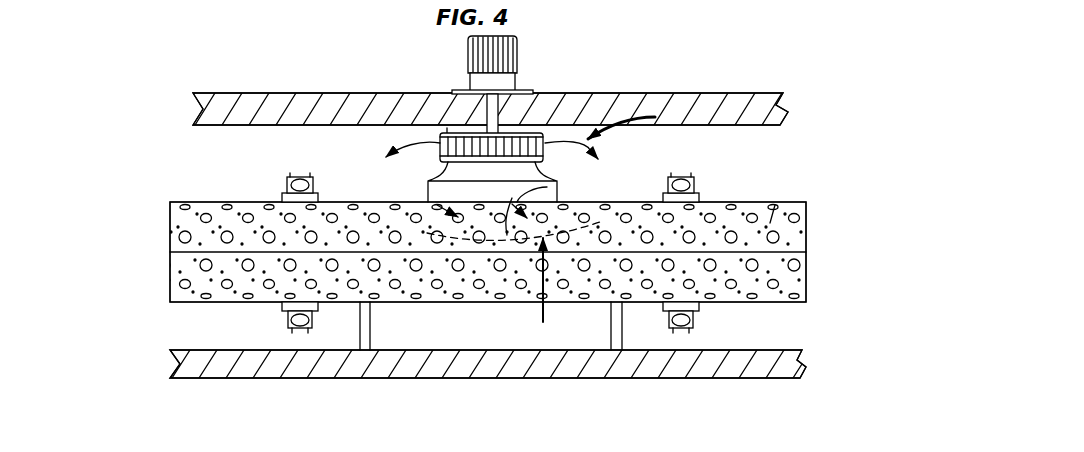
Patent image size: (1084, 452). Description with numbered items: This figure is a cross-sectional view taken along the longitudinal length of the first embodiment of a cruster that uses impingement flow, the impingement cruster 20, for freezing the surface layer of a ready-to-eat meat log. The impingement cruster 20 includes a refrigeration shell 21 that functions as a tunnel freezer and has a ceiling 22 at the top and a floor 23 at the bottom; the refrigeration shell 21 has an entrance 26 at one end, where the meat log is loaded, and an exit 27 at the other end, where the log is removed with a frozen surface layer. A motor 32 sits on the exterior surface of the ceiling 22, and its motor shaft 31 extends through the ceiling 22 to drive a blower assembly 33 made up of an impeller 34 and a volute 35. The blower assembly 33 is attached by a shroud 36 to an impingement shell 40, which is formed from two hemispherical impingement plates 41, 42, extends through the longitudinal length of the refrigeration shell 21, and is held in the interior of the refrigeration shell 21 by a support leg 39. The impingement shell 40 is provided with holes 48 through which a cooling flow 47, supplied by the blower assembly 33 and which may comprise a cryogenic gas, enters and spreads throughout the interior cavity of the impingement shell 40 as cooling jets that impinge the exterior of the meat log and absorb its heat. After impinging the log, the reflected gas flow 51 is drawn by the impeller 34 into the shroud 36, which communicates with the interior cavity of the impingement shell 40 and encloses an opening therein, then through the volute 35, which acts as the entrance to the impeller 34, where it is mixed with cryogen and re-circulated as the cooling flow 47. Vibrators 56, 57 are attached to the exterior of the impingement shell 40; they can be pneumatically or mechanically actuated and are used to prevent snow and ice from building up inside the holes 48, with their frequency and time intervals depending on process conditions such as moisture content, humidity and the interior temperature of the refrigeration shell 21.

The impingement cruster 20 is at (186, 62).
The refrigeration shell 21 is at (786, 381).
The ceiling 22 is at (751, 103).
The floor 23 is at (788, 350).
The entrance 26 is at (151, 166).
The exit 27 is at (833, 100).
The motor shaft 31 is at (494, 107).
The motor 32 is at (507, 82).
The blower assembly 33 is at (447, 130).
The impeller 34 is at (626, 122).
The volute 35 is at (449, 163).
The shroud 36 is at (547, 187).
The support leg 39 is at (368, 330).
The impingement shell 40 is at (746, 198).
The hemispherical impingement plate 41 is at (797, 283).
The hemispherical impingement plate 42 is at (775, 205).
The cooling flow 47 is at (660, 97).
The holes 48 is at (183, 282).
The reflected gas flow 51 is at (546, 294).
The vibrator 56 is at (306, 175).
The vibrator 57 is at (288, 323).